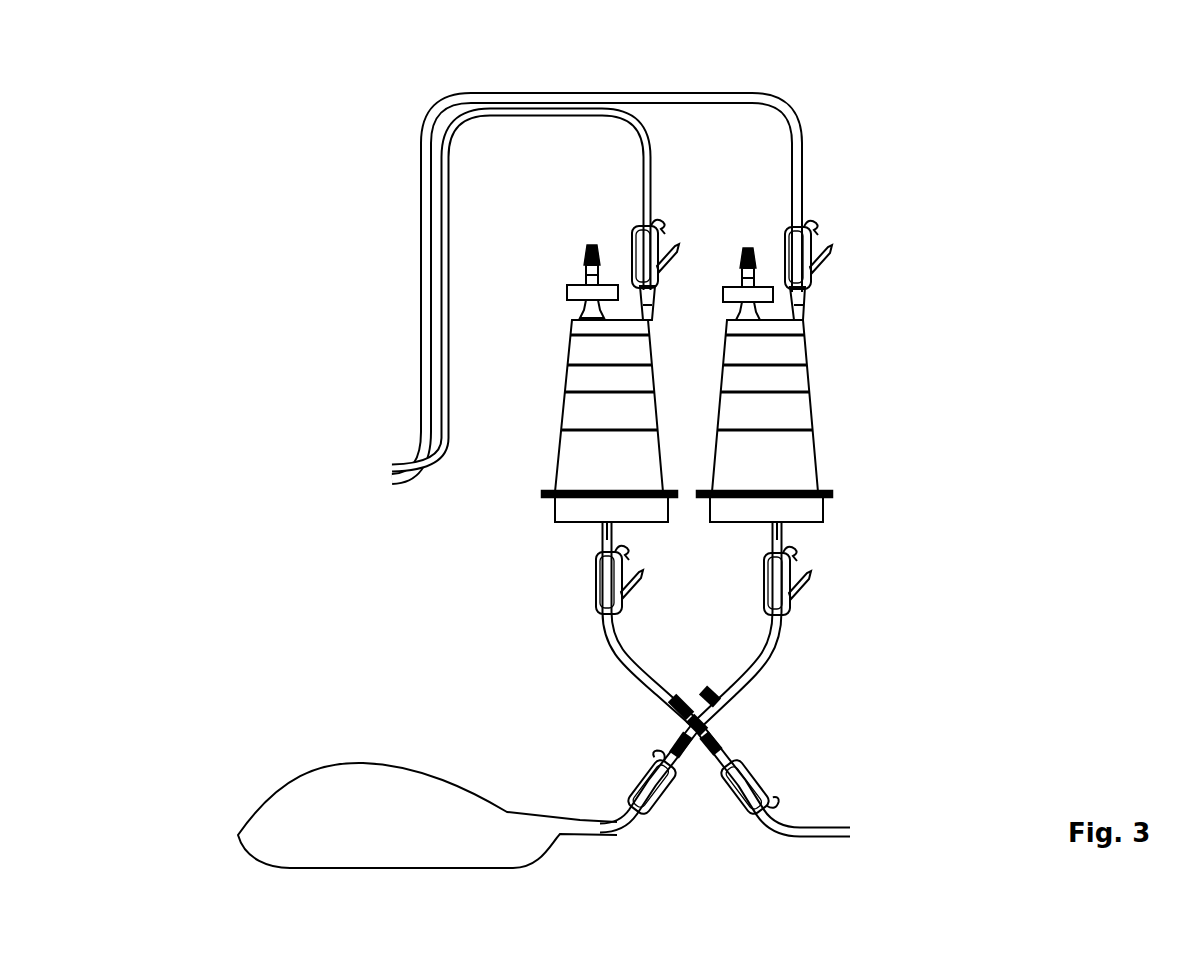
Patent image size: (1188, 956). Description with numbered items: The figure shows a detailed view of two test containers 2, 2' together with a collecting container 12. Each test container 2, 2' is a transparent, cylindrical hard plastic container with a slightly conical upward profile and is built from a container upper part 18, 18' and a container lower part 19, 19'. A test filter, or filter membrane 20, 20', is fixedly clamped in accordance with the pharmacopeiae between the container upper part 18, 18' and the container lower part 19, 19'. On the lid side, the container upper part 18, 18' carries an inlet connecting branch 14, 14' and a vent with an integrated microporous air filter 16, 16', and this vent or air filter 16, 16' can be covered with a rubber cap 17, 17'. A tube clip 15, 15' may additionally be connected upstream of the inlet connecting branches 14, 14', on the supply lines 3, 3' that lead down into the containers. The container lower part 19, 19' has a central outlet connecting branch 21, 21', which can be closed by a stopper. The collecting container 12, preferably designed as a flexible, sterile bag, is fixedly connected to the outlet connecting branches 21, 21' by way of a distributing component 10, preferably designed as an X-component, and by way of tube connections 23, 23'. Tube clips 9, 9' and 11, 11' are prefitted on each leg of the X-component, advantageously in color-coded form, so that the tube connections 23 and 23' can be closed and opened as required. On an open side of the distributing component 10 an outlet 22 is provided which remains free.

The test container 2 is at (801, 401).
The test container 2' is at (583, 408).
The tube line 3 is at (594, 239).
The second tube line 3' is at (542, 234).
The tube clip 9 is at (823, 590).
The tube clip 9' is at (563, 600).
The distributing component 10 is at (704, 721).
The tube clip 11 is at (607, 760).
The tube clip 11' is at (802, 779).
The collecting container 12 is at (427, 815).
The inlet connecting branch 14 is at (848, 283).
The inlet connecting branch 14' is at (674, 326).
The tube clip 15 is at (836, 235).
The tube clip 15' is at (634, 225).
The air filter 16 is at (726, 250).
The air filter 16' is at (561, 265).
The rubber cap 17 is at (738, 228).
The rubber cap 17' is at (574, 230).
The container upper part 18 is at (806, 406).
The container upper part 18' is at (569, 406).
The container lower part 19 is at (815, 524).
The container lower part 19' is at (563, 527).
The filter membrane 20 is at (810, 467).
The filter membrane 20' is at (582, 450).
The outlet connecting branch 21 is at (837, 555).
The outlet connecting branch 21' is at (544, 560).
The outlet 22 is at (865, 831).
The tube connection 23 is at (740, 675).
The tube connection 23' is at (689, 677).